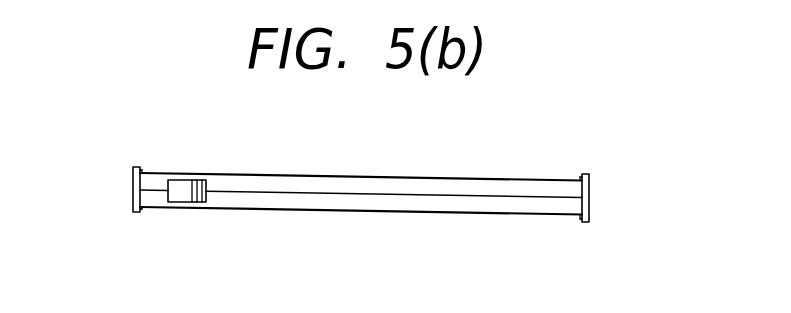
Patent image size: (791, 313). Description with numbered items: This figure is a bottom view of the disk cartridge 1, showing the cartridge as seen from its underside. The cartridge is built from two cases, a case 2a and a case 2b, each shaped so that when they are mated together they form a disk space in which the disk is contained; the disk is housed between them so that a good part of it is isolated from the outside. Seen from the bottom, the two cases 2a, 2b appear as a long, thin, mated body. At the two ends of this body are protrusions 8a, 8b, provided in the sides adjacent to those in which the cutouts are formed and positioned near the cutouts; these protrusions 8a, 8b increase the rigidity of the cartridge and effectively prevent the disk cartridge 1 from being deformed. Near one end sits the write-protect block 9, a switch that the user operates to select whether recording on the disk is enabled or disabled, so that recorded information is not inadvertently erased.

The disk cartridge 1 is at (619, 287).
The case 2a is at (455, 183).
The case 2b is at (485, 210).
The protrusion 8a is at (589, 222).
The protrusion 8b is at (133, 209).
The write-protect block 9 is at (190, 190).